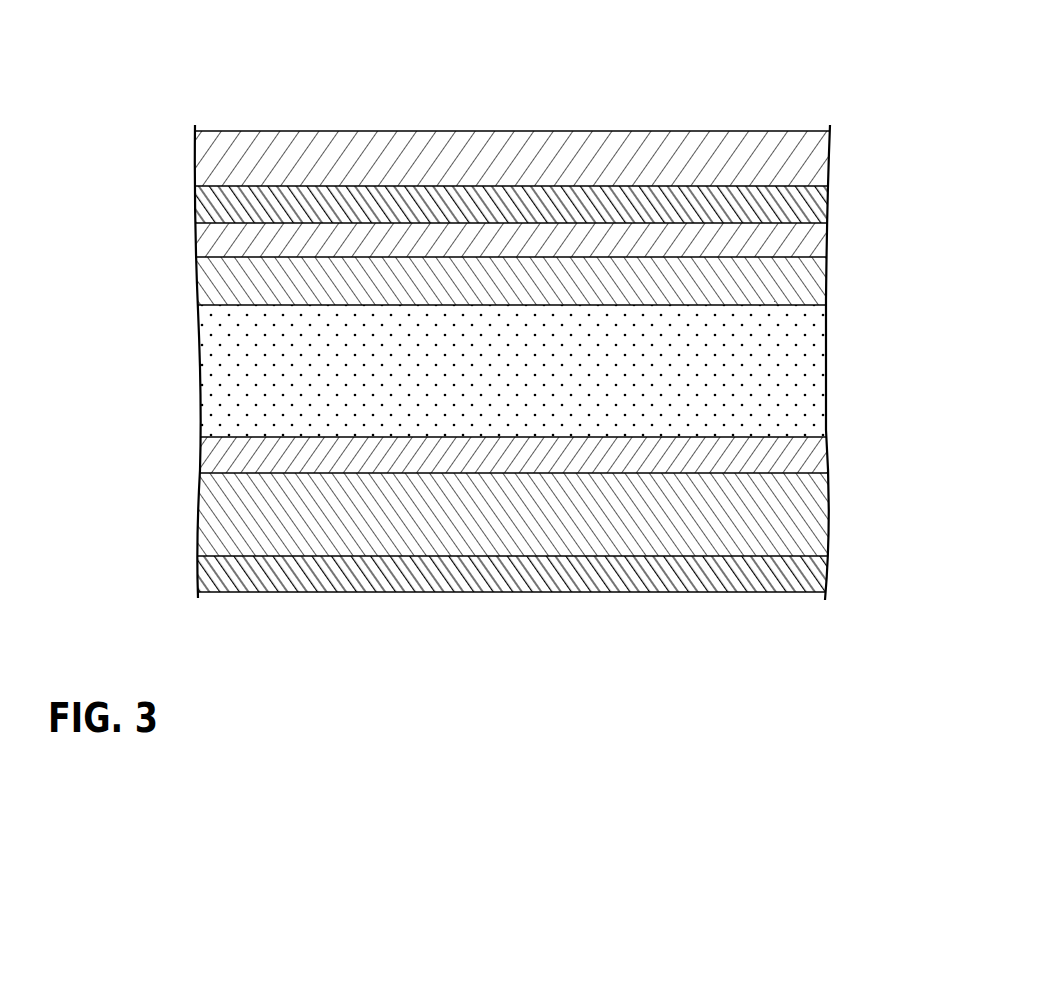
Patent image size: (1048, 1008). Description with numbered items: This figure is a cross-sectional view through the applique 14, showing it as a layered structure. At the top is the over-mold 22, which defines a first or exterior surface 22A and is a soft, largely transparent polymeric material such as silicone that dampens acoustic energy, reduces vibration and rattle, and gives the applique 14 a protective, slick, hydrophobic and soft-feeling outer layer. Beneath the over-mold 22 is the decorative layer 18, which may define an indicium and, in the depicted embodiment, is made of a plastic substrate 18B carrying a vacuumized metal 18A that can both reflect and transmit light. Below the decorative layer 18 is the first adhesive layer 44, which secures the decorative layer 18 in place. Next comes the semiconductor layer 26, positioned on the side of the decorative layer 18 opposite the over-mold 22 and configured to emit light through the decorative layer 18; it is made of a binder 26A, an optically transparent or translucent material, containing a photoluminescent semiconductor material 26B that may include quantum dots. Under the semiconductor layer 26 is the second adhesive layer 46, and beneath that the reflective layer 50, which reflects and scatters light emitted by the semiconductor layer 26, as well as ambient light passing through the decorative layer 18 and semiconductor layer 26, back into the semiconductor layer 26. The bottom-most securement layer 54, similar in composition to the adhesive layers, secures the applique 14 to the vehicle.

The applique 14 is at (562, 335).
The decorative layer 18 is at (497, 223).
The vacuumized metal 18A is at (224, 205).
The plastic substrate 18B is at (223, 243).
The over-mold 22 is at (807, 155).
The exterior surface 22A is at (678, 129).
The semiconductor layer 26 is at (576, 375).
The binder 26A is at (815, 387).
The photoluminescent semiconductor material 26B is at (800, 420).
The first adhesive layer 44 is at (805, 280).
The second adhesive layer 46 is at (805, 455).
The reflective layer 50 is at (810, 538).
The securement layer 54 is at (813, 573).